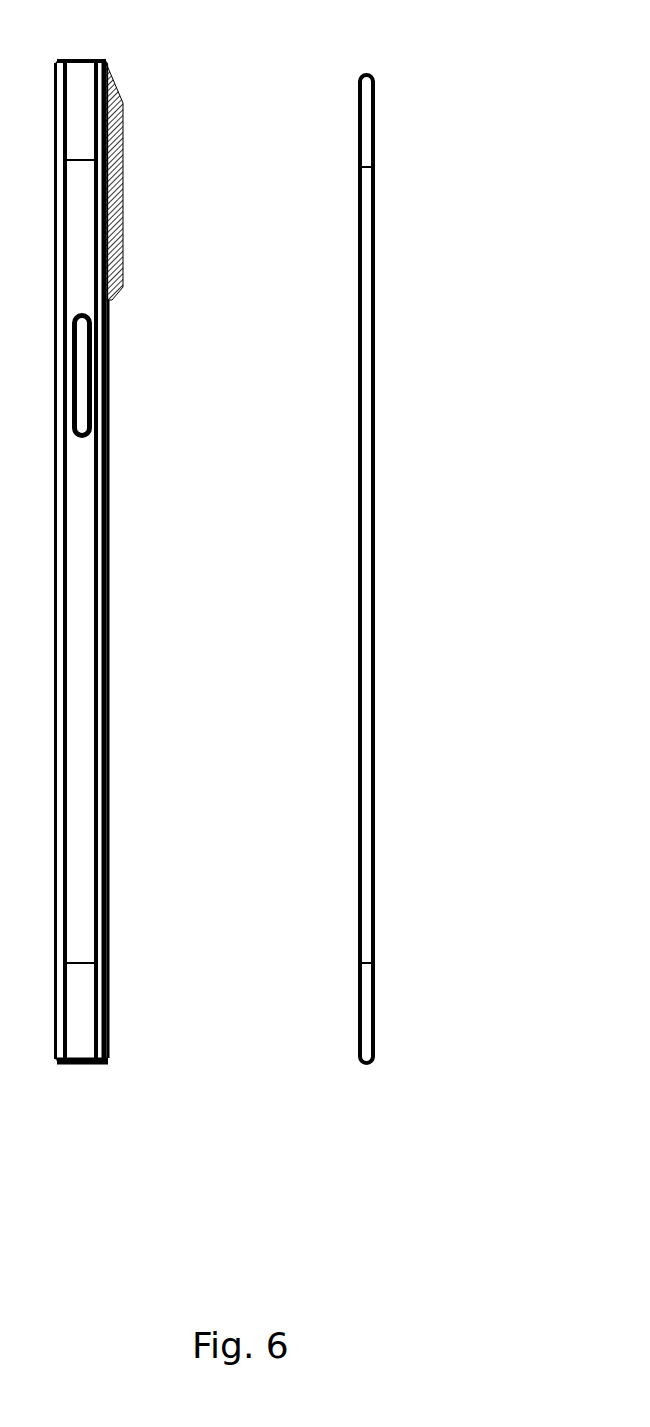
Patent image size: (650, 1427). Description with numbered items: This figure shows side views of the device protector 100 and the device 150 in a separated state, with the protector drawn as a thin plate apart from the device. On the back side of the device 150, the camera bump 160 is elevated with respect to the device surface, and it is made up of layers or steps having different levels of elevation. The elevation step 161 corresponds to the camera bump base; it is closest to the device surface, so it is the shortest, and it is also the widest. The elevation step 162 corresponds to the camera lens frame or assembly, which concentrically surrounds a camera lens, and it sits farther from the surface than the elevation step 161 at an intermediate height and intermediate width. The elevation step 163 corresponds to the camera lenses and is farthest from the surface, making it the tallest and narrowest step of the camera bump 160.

The device protector 100 is at (376, 445).
The device 150 is at (106, 68).
The camera bump 160 is at (135, 82).
The elevation step 161 is at (110, 300).
The elevation step 162 is at (113, 298).
The elevation step 163 is at (117, 290).